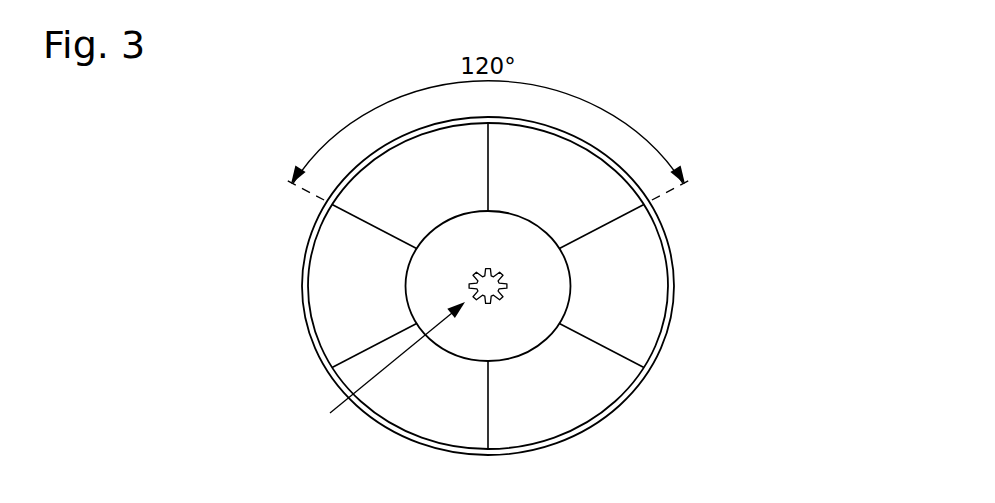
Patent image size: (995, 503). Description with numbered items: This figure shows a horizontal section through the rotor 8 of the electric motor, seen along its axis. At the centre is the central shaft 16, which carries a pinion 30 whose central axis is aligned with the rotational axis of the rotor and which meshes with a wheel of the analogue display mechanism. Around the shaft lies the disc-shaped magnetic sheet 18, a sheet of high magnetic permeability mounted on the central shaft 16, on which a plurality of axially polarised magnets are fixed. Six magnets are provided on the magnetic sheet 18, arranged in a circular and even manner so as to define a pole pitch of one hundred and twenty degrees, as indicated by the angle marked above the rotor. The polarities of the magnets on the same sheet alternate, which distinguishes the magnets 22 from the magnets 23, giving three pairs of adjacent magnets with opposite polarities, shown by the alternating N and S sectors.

The rotor 8 is at (762, 213).
The central shaft 16 is at (493, 300).
The magnetic sheet 18 is at (302, 286).
The magnets 22 is at (343, 338).
The magnets 23 is at (453, 422).
The pinion 30 is at (383, 371).